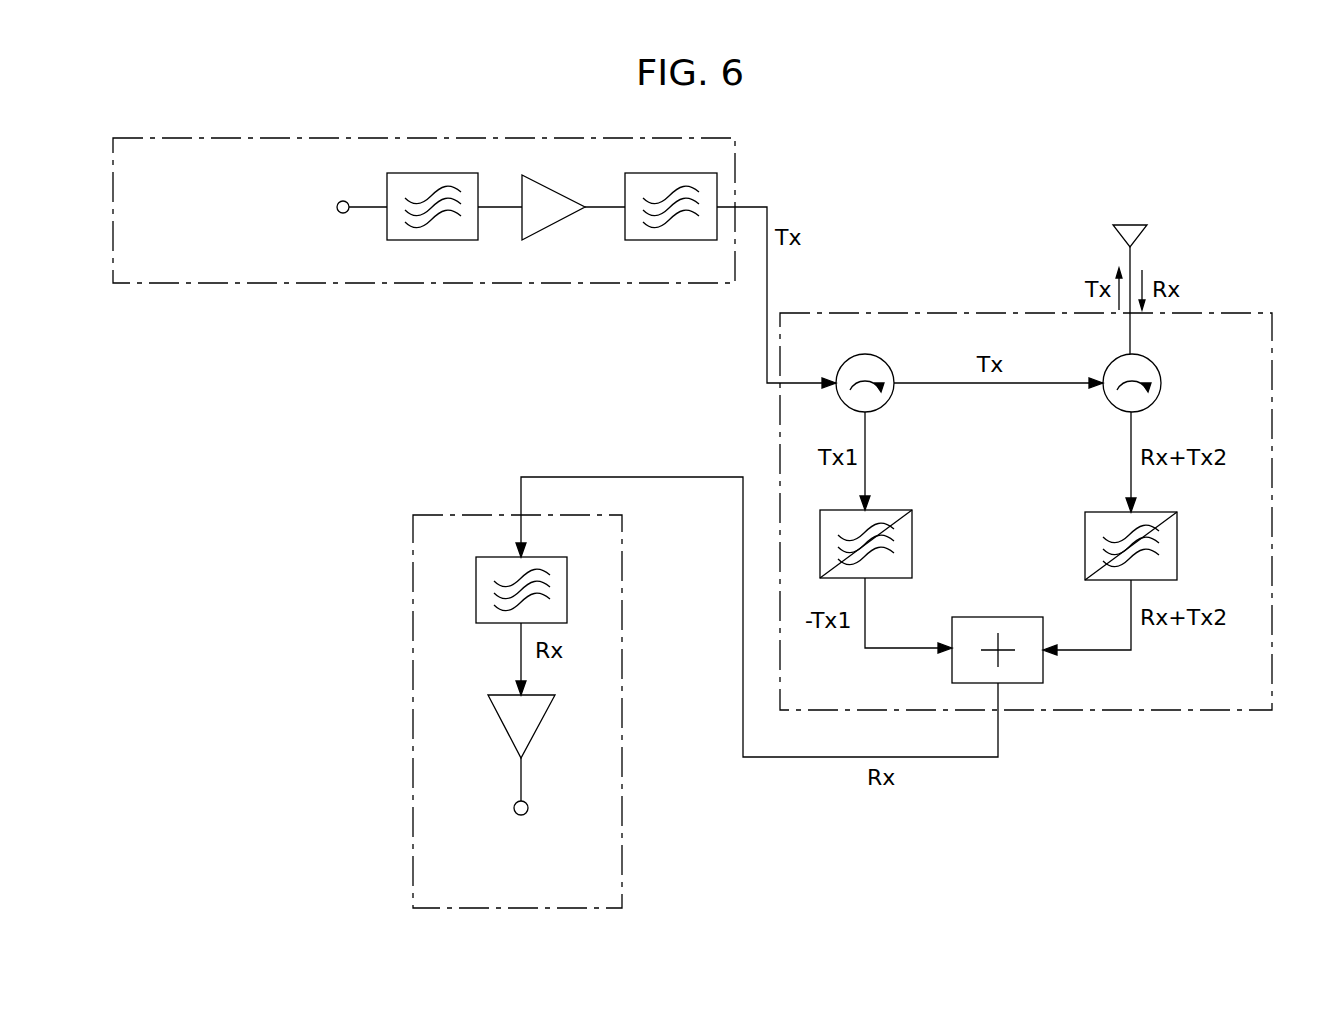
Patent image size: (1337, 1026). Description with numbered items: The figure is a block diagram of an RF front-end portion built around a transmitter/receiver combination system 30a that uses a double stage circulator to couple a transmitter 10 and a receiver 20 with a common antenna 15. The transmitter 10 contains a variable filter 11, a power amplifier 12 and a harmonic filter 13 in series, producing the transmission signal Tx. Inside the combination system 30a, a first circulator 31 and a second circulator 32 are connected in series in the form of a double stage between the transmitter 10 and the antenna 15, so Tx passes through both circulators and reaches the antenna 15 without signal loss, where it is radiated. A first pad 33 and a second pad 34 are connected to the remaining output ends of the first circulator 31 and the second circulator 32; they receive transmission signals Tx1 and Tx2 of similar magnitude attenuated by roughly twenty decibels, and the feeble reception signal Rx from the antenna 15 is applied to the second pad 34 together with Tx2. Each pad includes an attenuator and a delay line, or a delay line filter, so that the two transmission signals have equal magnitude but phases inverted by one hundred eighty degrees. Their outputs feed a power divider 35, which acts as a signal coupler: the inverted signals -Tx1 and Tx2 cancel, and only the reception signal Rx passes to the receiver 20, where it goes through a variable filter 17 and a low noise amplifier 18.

The transmitter 10 is at (263, 283).
The variable filter 11 is at (440, 240).
The power amplifier 12 is at (548, 235).
The harmonic filter 13 is at (667, 240).
The antenna 15 is at (1145, 232).
The variable filter 17 is at (476, 595).
The low noise amplifier 18 is at (500, 720).
The receiver 20 is at (622, 722).
The transmitter/receiver combination system 30a is at (1195, 713).
The first circulator 31 is at (865, 354).
The second circulator 32 is at (1157, 370).
The first pad 33 is at (912, 538).
The second pad 34 is at (1177, 537).
The power divider 35 is at (998, 617).